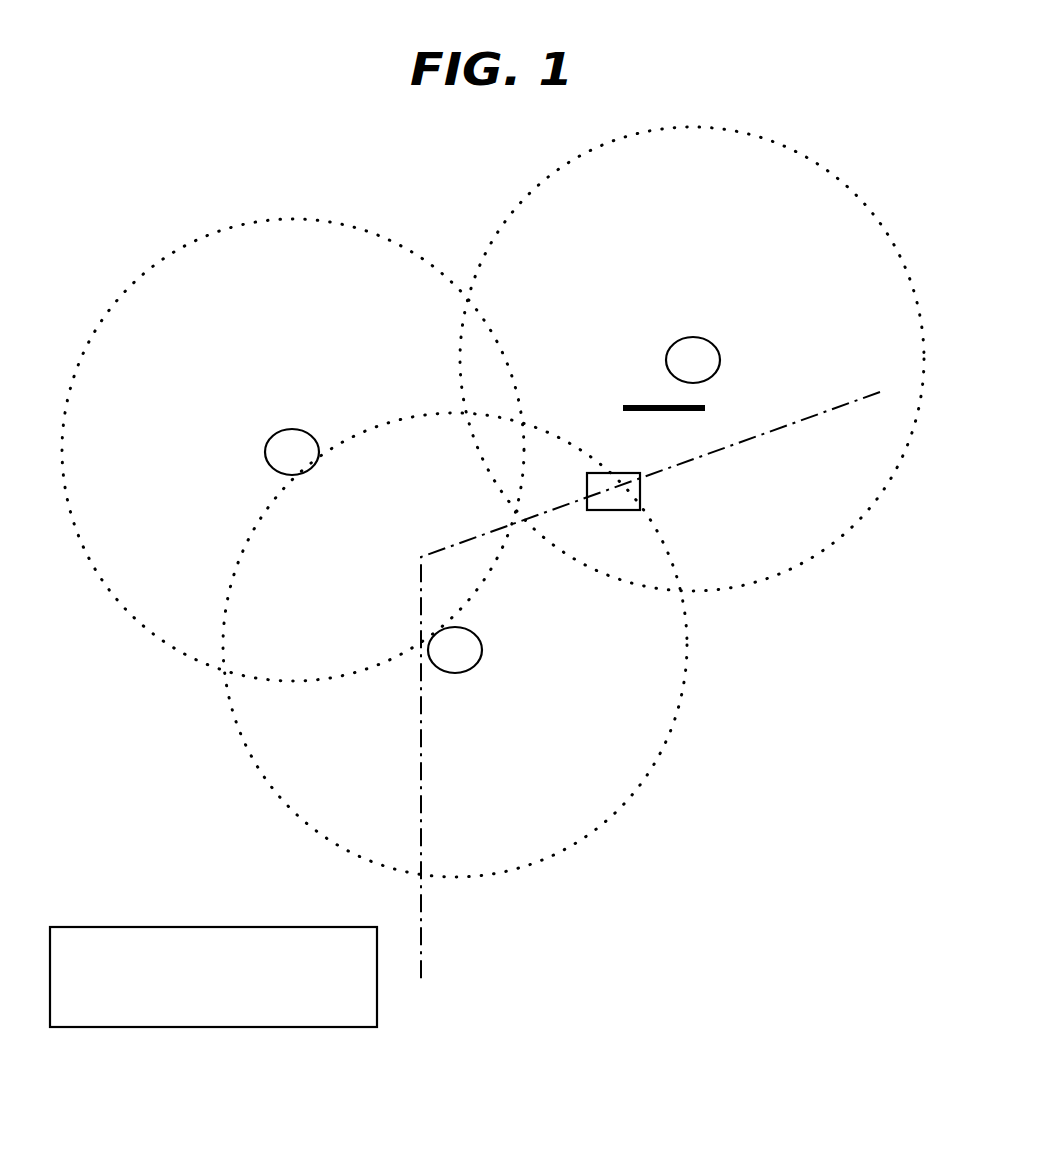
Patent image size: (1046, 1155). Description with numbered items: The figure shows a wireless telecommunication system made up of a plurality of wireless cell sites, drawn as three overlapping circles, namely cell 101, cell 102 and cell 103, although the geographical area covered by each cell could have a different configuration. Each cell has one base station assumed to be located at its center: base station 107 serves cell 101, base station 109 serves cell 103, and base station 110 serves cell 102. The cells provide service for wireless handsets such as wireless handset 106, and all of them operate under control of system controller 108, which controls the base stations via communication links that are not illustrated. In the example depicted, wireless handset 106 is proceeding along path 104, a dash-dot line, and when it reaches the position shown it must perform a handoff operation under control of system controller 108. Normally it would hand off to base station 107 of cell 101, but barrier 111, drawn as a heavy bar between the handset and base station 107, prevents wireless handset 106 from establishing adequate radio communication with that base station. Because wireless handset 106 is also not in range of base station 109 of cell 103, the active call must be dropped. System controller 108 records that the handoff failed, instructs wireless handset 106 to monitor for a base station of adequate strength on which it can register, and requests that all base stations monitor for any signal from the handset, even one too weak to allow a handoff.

The cell 101 is at (788, 152).
The cell 102 is at (455, 645).
The cell 103 is at (293, 450).
The path 104 is at (421, 903).
The wireless handset 106 is at (641, 491).
The base station 107 is at (697, 337).
The system controller 108 is at (213, 977).
The base station 109 is at (272, 437).
The base station 110 is at (481, 657).
The barrier 111 is at (652, 405).